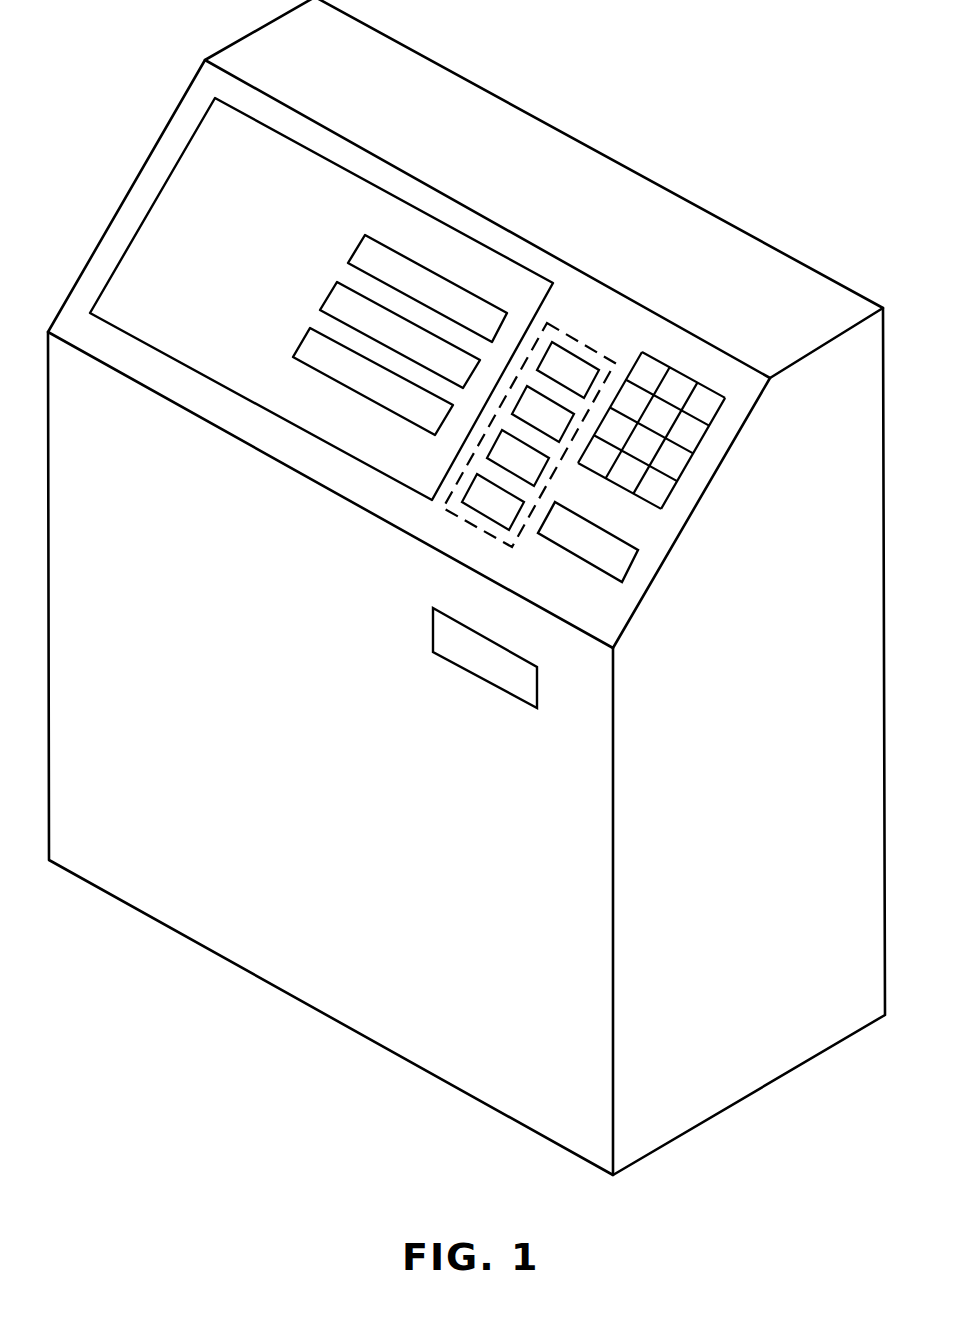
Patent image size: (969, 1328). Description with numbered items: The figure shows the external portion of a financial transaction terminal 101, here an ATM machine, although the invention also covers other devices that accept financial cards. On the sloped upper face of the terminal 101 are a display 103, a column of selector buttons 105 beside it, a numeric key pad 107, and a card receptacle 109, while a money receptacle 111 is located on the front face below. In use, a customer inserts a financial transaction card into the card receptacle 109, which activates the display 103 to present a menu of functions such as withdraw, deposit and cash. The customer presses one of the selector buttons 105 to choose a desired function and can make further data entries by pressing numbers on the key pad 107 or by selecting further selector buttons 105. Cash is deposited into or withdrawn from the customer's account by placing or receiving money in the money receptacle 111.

The financial transaction terminal 101 is at (512, 118).
The display 103 is at (205, 150).
The selector buttons 105 is at (577, 347).
The key pad 107 is at (700, 448).
The card receptacle 109 is at (618, 567).
The money receptacle 111 is at (475, 660).